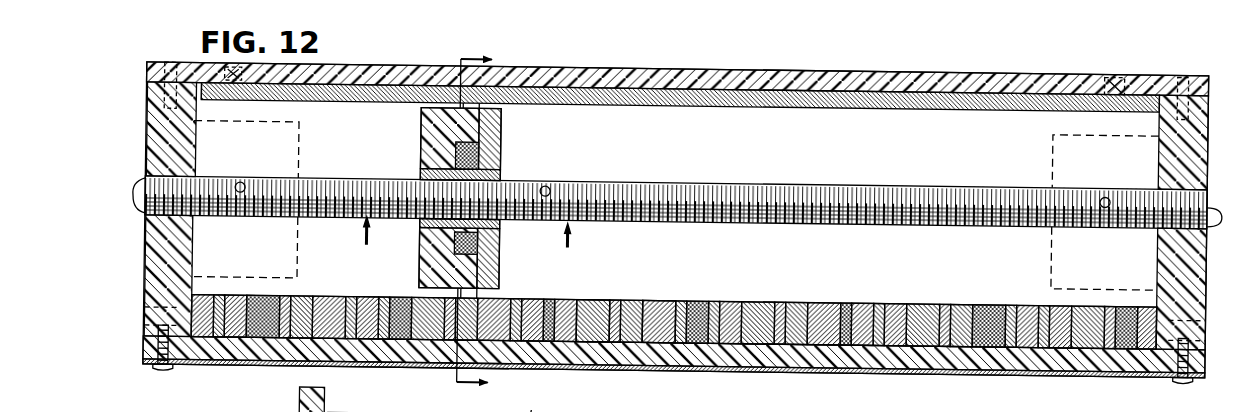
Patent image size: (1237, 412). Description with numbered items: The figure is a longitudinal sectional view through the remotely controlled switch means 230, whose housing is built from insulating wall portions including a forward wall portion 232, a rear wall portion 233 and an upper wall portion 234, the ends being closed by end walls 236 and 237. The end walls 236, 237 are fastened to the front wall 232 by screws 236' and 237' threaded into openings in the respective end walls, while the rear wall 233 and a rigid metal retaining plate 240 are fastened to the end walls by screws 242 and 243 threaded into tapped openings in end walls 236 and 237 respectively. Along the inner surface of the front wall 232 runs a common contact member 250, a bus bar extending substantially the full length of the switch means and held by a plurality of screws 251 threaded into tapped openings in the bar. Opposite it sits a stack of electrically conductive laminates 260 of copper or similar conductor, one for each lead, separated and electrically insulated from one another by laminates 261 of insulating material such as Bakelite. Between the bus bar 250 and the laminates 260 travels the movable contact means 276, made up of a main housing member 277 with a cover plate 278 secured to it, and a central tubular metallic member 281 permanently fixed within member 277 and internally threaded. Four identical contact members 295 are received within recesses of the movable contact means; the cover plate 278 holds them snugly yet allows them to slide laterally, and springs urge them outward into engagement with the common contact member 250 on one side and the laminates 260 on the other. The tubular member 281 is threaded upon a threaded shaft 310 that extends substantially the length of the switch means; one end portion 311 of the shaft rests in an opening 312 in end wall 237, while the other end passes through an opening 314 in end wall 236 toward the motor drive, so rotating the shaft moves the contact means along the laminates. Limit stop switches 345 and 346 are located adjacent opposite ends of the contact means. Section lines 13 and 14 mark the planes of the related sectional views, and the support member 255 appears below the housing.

The section line 13- 13 is at (494, 215).
The section line 14- 14 is at (470, 235).
The remotely controlled switch means 230 is at (645, 62).
The forward wall portion 232 is at (755, 70).
The rear wall portion 233 is at (690, 358).
The upper wall portion 234 is at (507, 402).
The end wall 236 is at (139, 208).
The screw 236' is at (139, 73).
The end wall 237 is at (1160, 222).
The screw 237' is at (1200, 79).
The retaining plate 240 is at (831, 361).
The screw 242 is at (167, 371).
The screw 243 is at (1182, 372).
The common contact member 250 is at (886, 88).
The screw 251 is at (262, 100).
The support member 255 is at (428, 411).
The electrically conductive laminate 260 is at (255, 294).
The insulating laminate 261 is at (606, 294).
The movable contact means 276 is at (502, 122).
The main housing member 277 is at (420, 126).
The cover plate 278 is at (501, 246).
The tubular metallic member 281 is at (502, 170).
The contact member 295 is at (481, 104).
The threaded shaft 310 is at (780, 177).
The end portion 311 is at (1218, 204).
The opening 312 is at (1208, 178).
The opening 314 is at (196, 180).
The limit stop switch 345 is at (1050, 152).
The limit stop switch 346 is at (300, 164).